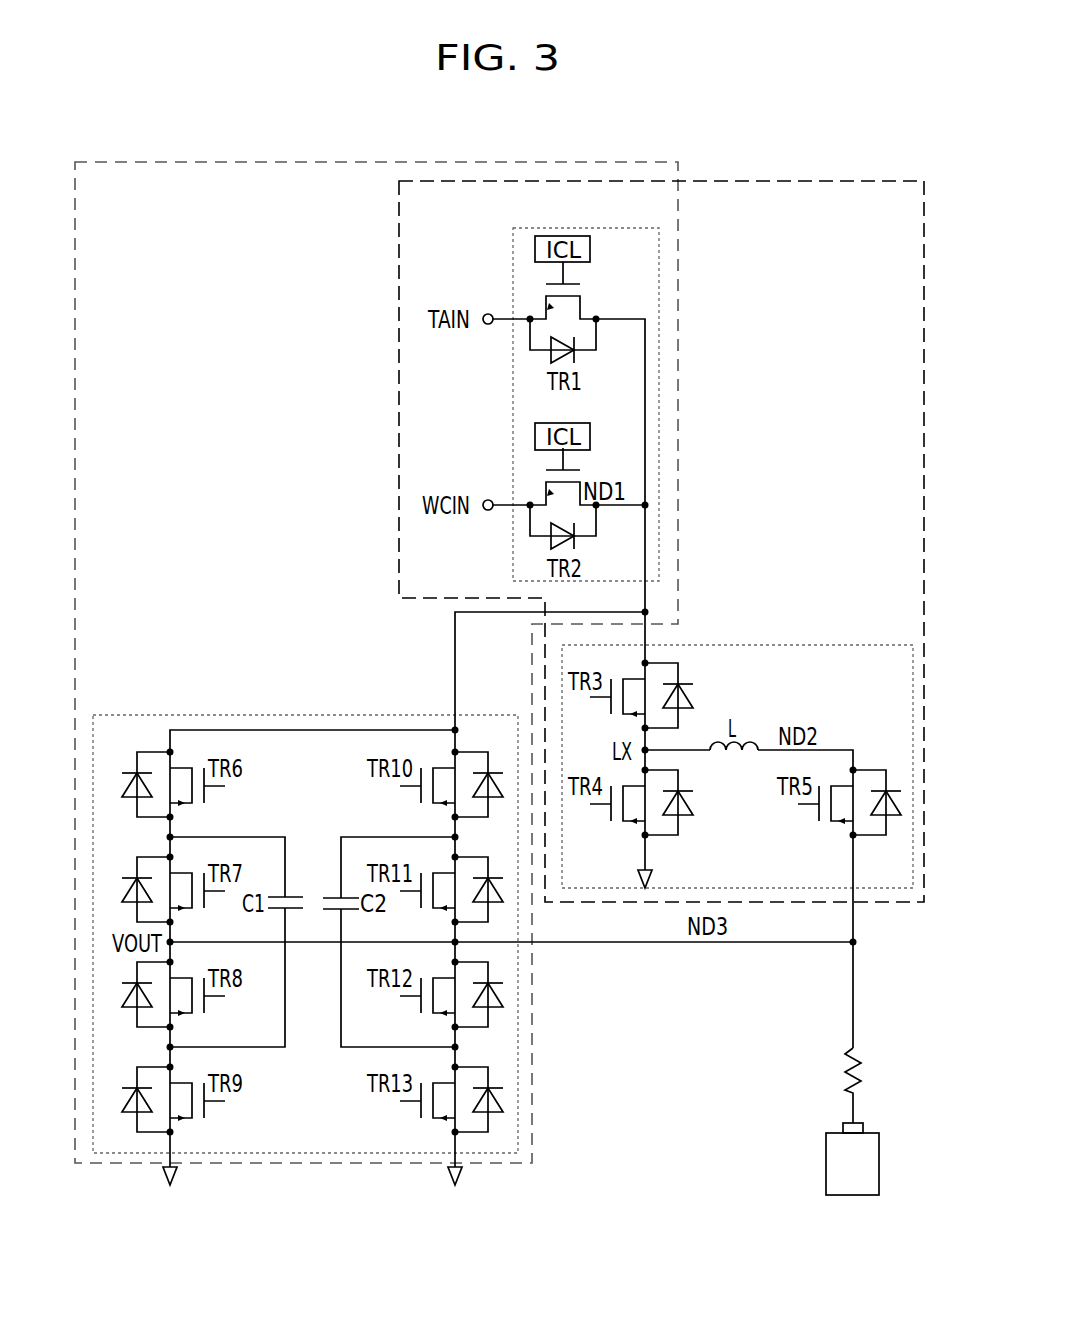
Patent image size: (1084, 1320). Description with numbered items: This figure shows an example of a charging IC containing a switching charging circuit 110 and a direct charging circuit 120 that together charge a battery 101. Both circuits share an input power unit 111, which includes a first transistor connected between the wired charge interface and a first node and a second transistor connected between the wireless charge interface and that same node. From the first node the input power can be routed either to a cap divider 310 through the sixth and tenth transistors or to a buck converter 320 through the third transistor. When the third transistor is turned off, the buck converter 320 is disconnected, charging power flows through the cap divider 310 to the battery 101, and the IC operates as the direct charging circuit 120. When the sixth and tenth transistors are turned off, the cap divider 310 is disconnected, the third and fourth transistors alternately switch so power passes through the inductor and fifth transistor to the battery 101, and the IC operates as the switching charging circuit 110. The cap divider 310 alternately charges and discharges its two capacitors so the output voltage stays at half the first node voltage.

The battery 101 is at (873, 1129).
The switching charging circuit 110 is at (808, 181).
The input power unit 111 is at (592, 228).
The direct charging circuit 120 is at (372, 162).
The cap divider 310 is at (313, 714).
The buck converter 320 is at (757, 645).